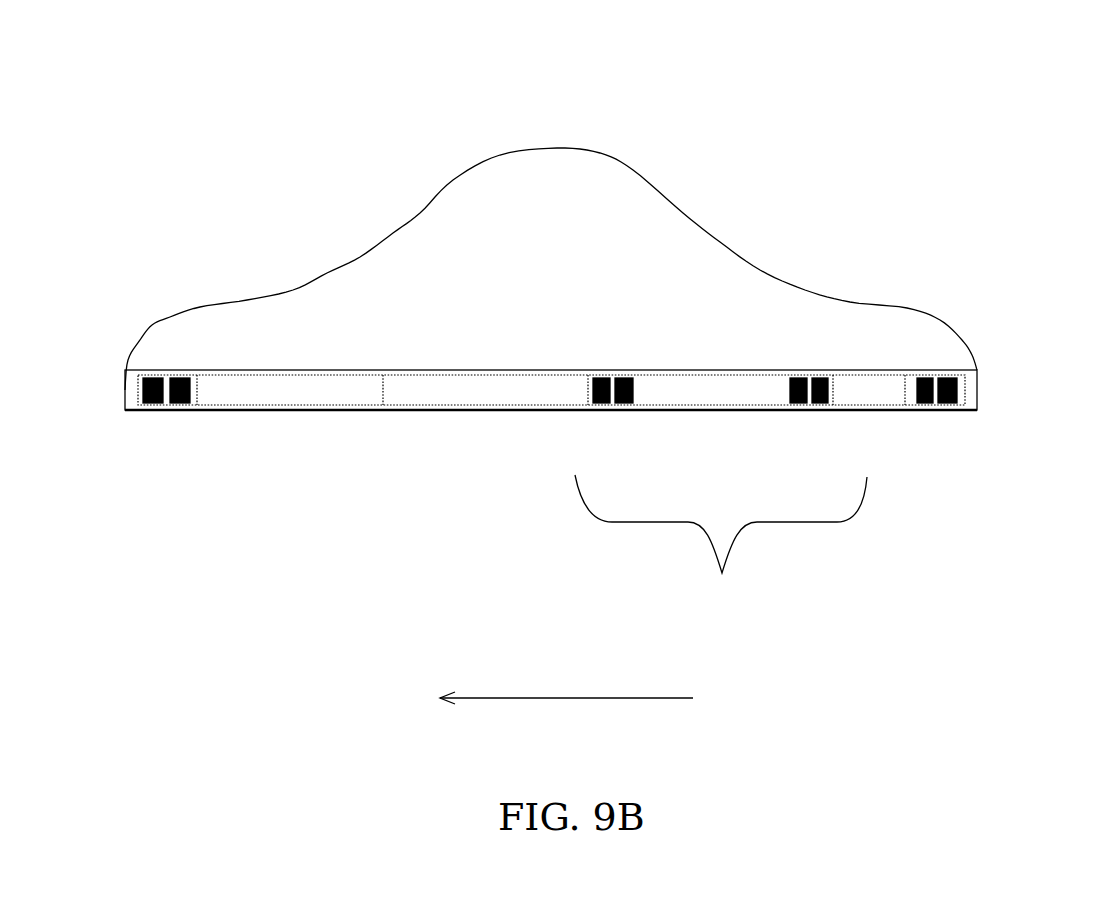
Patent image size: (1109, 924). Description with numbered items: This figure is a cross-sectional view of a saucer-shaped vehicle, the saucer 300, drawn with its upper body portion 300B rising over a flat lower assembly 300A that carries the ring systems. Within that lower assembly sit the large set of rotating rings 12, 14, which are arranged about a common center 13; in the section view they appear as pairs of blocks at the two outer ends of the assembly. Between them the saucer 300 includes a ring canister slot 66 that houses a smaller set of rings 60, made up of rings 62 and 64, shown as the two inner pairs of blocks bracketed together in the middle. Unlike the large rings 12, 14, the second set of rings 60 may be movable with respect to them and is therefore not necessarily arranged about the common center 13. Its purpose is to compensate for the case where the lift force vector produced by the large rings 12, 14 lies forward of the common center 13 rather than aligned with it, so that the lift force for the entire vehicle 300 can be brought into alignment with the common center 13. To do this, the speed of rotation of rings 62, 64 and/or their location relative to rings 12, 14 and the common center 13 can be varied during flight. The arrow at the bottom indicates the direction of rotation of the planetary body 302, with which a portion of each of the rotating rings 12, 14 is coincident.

The saucer 300 is at (582, 39).
The sensor strip assembly 300A is at (124, 382).
The vehicle body 300B is at (516, 272).
The rotating ring 12 is at (155, 410).
The rotating ring 14 is at (182, 403).
The common center 13 is at (532, 412).
The ring canister slot 66 is at (413, 393).
The smaller set of rings 60 is at (721, 495).
The ring 62 is at (603, 403).
The ring 64 is at (633, 403).
The planetary body 302 is at (542, 698).